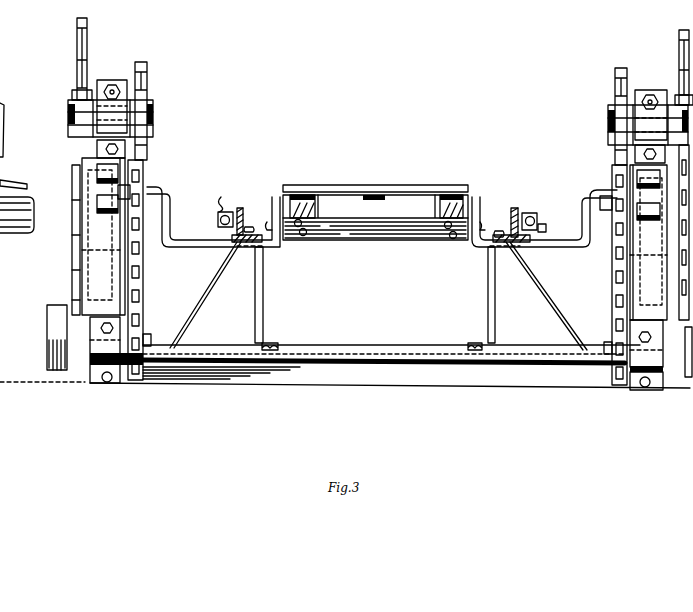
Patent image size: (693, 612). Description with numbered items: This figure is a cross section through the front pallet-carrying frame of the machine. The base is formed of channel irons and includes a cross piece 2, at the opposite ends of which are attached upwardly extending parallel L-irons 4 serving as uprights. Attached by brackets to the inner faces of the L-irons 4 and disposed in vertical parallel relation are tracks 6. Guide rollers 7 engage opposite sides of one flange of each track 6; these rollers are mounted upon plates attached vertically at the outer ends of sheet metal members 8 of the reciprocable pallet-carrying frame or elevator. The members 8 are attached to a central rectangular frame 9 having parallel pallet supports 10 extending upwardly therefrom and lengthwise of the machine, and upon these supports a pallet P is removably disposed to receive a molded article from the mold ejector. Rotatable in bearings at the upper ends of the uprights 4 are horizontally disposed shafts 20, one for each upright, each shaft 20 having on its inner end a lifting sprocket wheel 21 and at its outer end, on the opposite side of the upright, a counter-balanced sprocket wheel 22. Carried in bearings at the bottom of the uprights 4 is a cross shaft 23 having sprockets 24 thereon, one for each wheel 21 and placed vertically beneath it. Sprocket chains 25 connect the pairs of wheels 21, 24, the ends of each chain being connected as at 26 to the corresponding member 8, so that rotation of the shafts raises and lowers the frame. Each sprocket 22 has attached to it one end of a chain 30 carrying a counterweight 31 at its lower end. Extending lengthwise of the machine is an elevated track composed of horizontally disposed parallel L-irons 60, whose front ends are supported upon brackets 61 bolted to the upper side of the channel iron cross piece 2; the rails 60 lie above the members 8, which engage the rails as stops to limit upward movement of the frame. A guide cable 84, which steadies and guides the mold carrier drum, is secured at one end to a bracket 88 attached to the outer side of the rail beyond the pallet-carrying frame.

The cross piece 2 is at (357, 378).
The L-irons 4 is at (118, 298).
The tracks 6 is at (93, 248).
The guide rollers 7 is at (104, 201).
The sheet metal members 8 is at (170, 222).
The central rectangular frame 9 is at (357, 233).
The pallet supports 10 is at (320, 193).
The pallet P is at (390, 188).
The shafts 20 is at (155, 123).
The lifting sprocket wheel 21 is at (147, 88).
The counter-balanced sprocket wheel 22 is at (78, 60).
The cross shaft 23 is at (352, 352).
The sprockets 24 is at (145, 340).
The sprocket chains 25 is at (147, 153).
The chain connection 26 is at (147, 193).
The chain 30 is at (80, 277).
The counterweight 31 is at (52, 337).
The L-irons 60 is at (240, 208).
The brackets 61 is at (263, 285).
The guide cable 84 is at (218, 218).
The bracket 88 is at (550, 228).